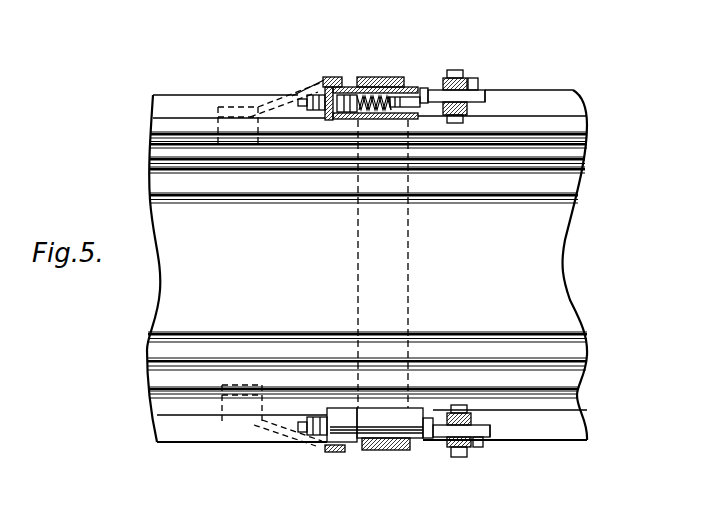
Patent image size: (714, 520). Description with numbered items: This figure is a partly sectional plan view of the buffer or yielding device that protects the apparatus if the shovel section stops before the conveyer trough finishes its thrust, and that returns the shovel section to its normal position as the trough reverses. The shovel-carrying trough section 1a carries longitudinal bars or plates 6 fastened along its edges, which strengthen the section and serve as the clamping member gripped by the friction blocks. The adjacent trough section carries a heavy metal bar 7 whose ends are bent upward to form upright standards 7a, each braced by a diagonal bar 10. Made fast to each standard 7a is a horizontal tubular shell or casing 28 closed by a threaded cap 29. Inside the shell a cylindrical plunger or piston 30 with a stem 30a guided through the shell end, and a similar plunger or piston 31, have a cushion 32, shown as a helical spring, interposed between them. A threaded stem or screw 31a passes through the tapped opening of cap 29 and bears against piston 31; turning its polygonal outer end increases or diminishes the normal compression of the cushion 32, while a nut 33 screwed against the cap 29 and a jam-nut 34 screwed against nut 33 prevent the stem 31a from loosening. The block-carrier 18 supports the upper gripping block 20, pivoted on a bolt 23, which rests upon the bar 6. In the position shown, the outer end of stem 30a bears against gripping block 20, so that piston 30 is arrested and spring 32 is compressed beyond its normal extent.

The shovel-carrying trough section 1a is at (367, 266).
The longitudinal bar or plate 6 is at (543, 445).
The heavy metal bar 7 is at (409, 288).
The upright standard 7a is at (395, 80).
The diagonal brace bar 10 is at (342, 452).
The block-carrier 18 is at (477, 80).
The upper gripping or friction block 20 is at (490, 95).
The pivot bolt 23 is at (463, 74).
The tubular shell or casing 28 is at (380, 121).
The cap 29 is at (333, 121).
The plunger or piston 30 is at (398, 90).
The plunger stem 30a is at (426, 88).
The plunger or piston 31 is at (353, 84).
The threaded stem or screw 31a is at (336, 77).
The cushion 32 is at (382, 77).
The nut 33 is at (323, 77).
The jam-nut 34 is at (308, 87).